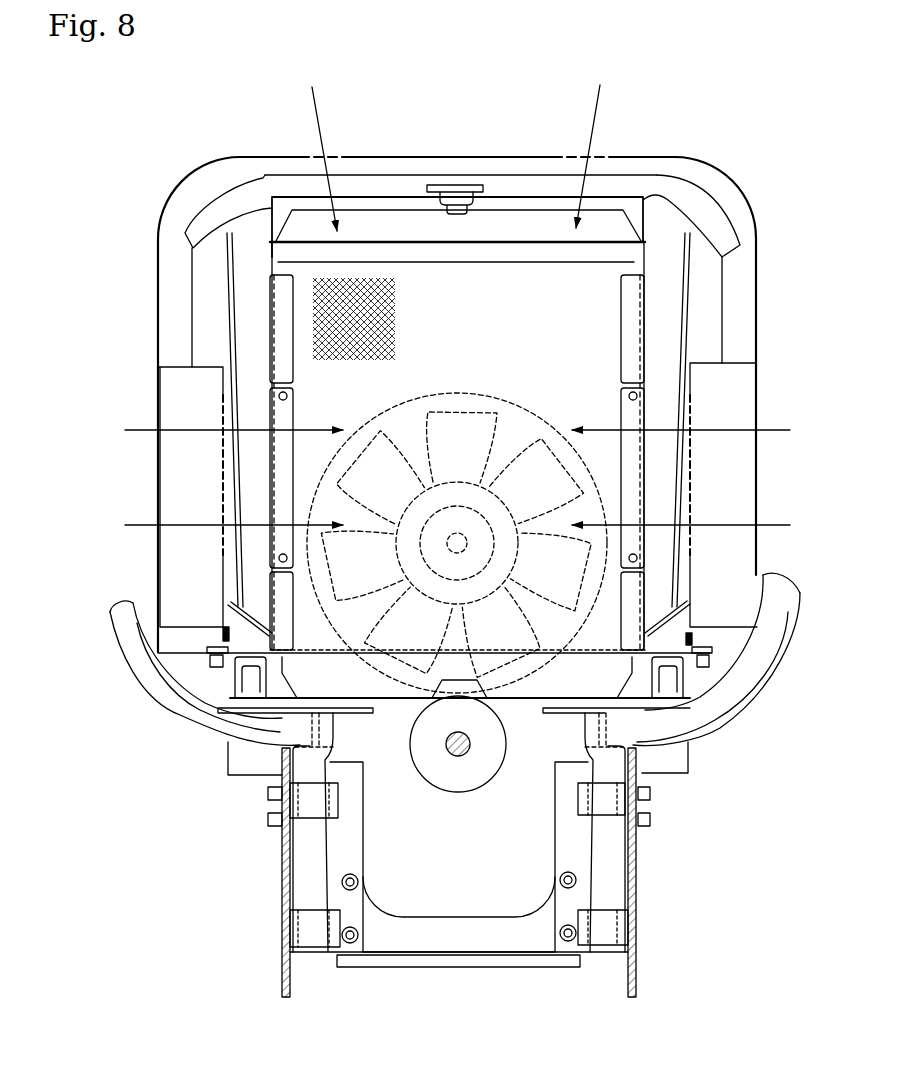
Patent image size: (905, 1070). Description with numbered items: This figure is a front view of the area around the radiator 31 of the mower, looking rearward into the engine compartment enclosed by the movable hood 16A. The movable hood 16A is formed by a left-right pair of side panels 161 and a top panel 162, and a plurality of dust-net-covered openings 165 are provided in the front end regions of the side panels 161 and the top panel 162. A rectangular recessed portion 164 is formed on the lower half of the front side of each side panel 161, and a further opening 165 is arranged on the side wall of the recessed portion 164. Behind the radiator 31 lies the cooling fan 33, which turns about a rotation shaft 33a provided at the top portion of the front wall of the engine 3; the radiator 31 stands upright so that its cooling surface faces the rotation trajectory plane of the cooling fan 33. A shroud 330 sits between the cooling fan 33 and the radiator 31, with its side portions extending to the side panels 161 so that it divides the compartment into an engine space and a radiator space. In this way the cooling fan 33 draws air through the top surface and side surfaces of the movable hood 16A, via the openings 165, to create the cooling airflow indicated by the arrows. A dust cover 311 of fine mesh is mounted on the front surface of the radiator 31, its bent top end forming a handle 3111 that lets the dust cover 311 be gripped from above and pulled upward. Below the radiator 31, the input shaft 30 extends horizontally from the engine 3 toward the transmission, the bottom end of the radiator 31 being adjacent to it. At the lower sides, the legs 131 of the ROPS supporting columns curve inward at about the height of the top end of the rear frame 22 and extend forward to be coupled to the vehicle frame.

The movable hood 16A is at (218, 156).
The top panel 162 is at (443, 155).
The shroud 330 is at (661, 217).
The side panels 161 is at (158, 290).
The recessed portion 164 is at (182, 421).
The openings 165 is at (340, 146).
The radiator 31 is at (463, 194).
The handle 3111 is at (302, 248).
The dust cover 311 is at (313, 330).
The cooling fan 33 is at (475, 422).
The rotation shaft 33a is at (466, 536).
The input shaft 30 is at (460, 758).
The leg 131 is at (192, 727).
The rear frame 22 is at (284, 893).
The engine 3 is at (480, 914).